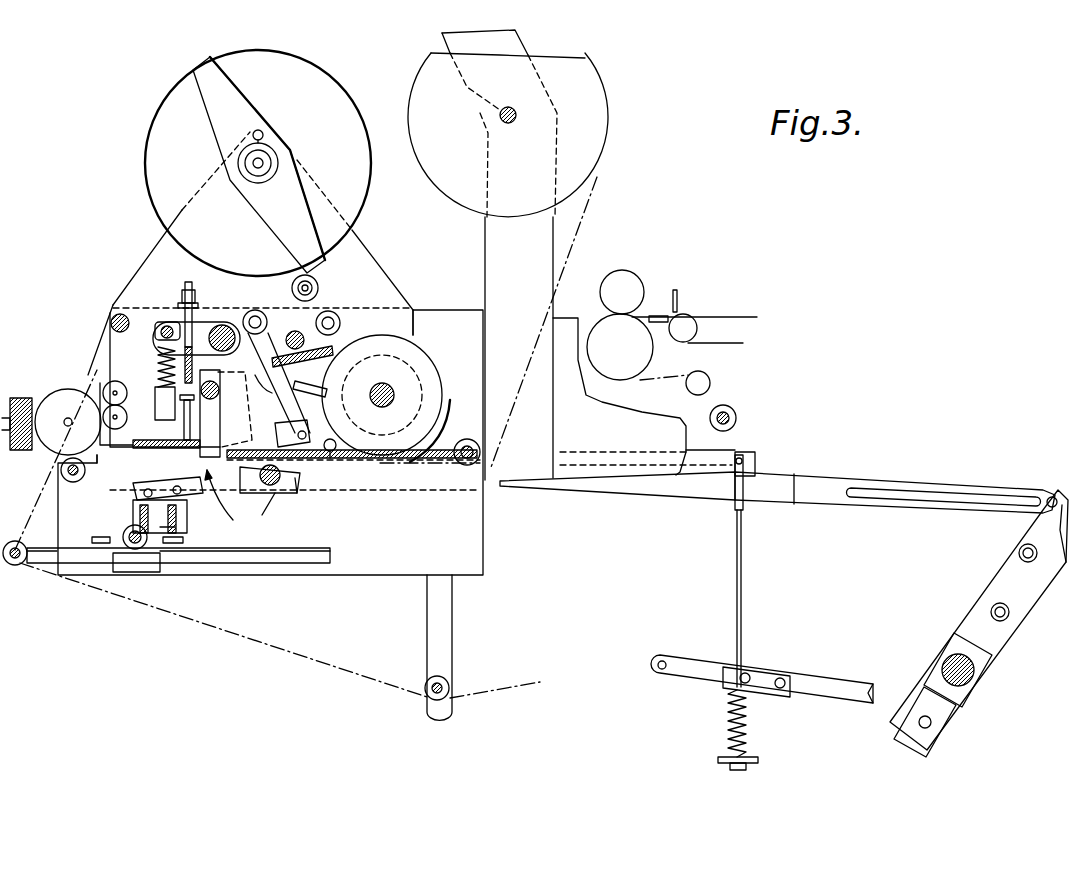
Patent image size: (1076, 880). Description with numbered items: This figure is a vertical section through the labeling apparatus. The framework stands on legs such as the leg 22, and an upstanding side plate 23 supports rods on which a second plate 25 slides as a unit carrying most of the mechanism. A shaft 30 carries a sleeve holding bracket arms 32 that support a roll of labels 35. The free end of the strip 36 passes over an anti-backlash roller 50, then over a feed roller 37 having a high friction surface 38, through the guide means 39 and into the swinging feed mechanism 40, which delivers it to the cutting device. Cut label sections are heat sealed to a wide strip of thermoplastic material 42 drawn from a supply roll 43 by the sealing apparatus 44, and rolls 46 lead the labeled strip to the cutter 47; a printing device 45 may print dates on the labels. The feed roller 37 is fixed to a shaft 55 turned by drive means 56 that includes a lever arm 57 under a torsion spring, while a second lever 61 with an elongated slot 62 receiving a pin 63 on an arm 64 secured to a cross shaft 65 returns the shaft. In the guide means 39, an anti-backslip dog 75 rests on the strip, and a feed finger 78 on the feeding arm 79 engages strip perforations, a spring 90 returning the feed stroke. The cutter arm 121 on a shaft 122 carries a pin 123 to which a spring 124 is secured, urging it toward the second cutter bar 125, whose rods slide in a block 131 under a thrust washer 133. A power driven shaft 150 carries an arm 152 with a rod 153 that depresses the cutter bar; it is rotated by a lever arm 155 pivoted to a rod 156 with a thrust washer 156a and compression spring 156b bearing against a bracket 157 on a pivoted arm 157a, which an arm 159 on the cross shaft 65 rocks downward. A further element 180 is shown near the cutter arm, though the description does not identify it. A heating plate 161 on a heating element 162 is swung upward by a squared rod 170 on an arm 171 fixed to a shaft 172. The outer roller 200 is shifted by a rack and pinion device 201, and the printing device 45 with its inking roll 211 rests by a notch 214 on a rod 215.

The leg 22 is at (443, 608).
The side plate 23 is at (470, 521).
The plate 25 is at (363, 250).
The shaft 30 is at (263, 163).
The bracket arms 32 is at (230, 92).
The roll of labels 35 is at (325, 80).
The free end of the strip of labels 36 is at (348, 317).
The feed roller 37 is at (427, 367).
The high friction surface 38 is at (373, 330).
The guide means 39 is at (335, 492).
The feed mechanism 40 is at (279, 327).
The strip of thermoplastic material 42 is at (38, 487).
The supply roll 43 is at (590, 90).
The sealing apparatus 44 is at (118, 484).
The printing device 45 is at (60, 386).
The rolls 46 is at (724, 388).
The cutter 47 is at (686, 303).
The anti-backlash roller 50 is at (310, 283).
The shaft 55 is at (394, 393).
The drive means 56 is at (800, 468).
The lever arm 57 is at (445, 432).
The second lever 61 is at (838, 483).
The elongated slot 62 is at (967, 498).
The pin 63 is at (1050, 496).
The arm 64 is at (1020, 574).
The cross shaft 65 is at (967, 682).
The anti-backslip dog 75 is at (333, 458).
The feed finger 78 is at (323, 420).
The feeding arm 79 is at (255, 376).
The spring 90 is at (290, 363).
The arm 121 is at (274, 433).
The shaft 122 is at (238, 409).
The pin 123 is at (200, 356).
The spring 124 is at (200, 358).
The second cutter bar 125 is at (100, 477).
The block 131 is at (163, 397).
The thrust washer 133 is at (158, 360).
The power driven shaft 150 is at (212, 320).
The arm 152 is at (187, 332).
The rod 153 is at (155, 336).
The lever arm 155 is at (755, 452).
The rod 156 is at (741, 543).
The thrust washer 156a is at (747, 760).
The compression spring 156b is at (727, 726).
The bracket 157 is at (777, 670).
The arm 157a is at (833, 687).
The arm 159 is at (920, 742).
The plate 161 is at (157, 480).
The heating element 162 is at (133, 498).
The squared rod 170 is at (170, 527).
The arm 171 is at (273, 511).
The shaft 172 is at (296, 480).
The hub 180 is at (225, 321).
The outer roller 200 is at (20, 567).
The rack and pinion device 201 is at (118, 533).
The inking roll 211 is at (229, 500).
The notch 214 is at (150, 440).
The rod 215 is at (82, 455).